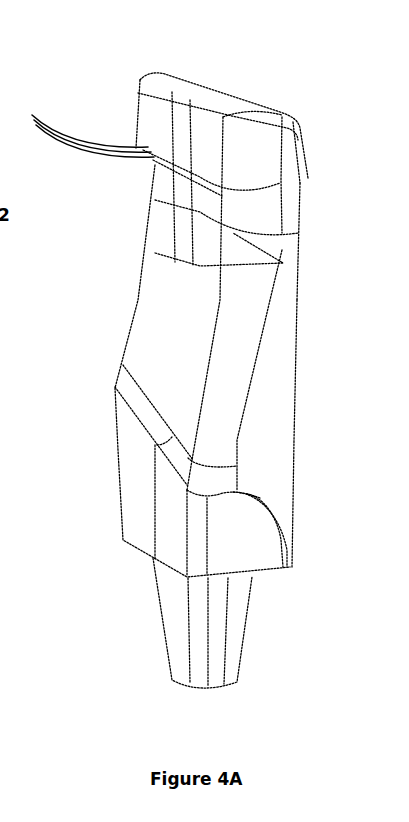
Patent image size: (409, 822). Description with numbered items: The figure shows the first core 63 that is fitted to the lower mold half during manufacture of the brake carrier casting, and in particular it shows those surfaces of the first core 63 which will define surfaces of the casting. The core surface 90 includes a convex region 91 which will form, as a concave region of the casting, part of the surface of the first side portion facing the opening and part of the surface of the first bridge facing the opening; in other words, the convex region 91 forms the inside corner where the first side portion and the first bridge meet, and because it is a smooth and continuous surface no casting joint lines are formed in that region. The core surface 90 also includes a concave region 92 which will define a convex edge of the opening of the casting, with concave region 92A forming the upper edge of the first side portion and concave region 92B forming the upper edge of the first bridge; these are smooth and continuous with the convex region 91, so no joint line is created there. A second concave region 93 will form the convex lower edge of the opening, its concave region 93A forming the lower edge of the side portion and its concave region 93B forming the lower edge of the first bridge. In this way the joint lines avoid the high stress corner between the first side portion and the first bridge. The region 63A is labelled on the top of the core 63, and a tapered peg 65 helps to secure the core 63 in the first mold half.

The first core 63 is at (315, 95).
The top surface of cover 63A is at (217, 97).
The concave region 92B is at (79, 123).
The concave region 92 is at (183, 166).
The concave region 92A is at (302, 180).
The core surface 90 is at (237, 353).
The convex region 91 is at (182, 378).
The concave region 93B is at (126, 402).
The second concave region 93 is at (168, 407).
The concave region 93A is at (262, 508).
The tapered peg 65 is at (178, 622).